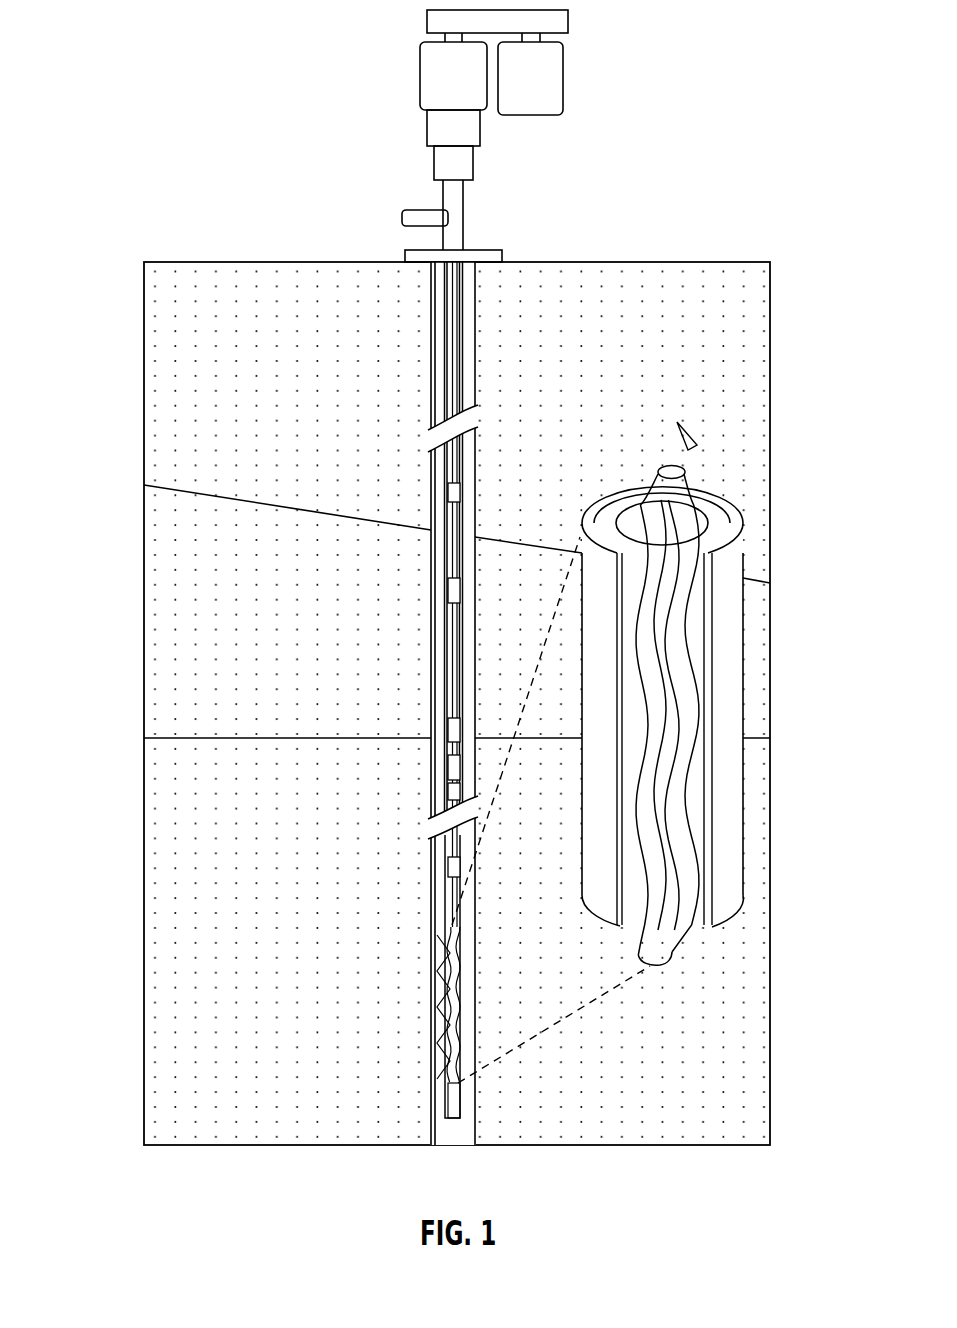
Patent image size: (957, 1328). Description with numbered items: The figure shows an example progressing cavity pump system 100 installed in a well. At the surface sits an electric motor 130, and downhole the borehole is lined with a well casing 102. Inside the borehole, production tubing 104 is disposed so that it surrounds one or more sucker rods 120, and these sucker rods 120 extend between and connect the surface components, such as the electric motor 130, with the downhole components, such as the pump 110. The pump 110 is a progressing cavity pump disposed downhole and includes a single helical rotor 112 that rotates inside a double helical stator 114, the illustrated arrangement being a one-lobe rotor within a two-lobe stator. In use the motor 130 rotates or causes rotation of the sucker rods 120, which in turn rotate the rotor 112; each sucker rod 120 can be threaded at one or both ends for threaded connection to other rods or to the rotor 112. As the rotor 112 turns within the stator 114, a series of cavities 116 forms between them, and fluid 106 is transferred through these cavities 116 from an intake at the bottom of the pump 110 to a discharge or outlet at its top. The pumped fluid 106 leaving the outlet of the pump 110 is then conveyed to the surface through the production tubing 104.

The PCP system 100 is at (583, 228).
The electric motor 130 is at (427, 126).
The stator 114 is at (622, 492).
The sucker rods 120 is at (444, 393).
The production tubing 104 is at (446, 573).
The well casing 102 is at (432, 663).
The pump 110 is at (749, 641).
The fluid 106 is at (703, 487).
The cavities 116 is at (645, 762).
The rotor 112 is at (653, 963).